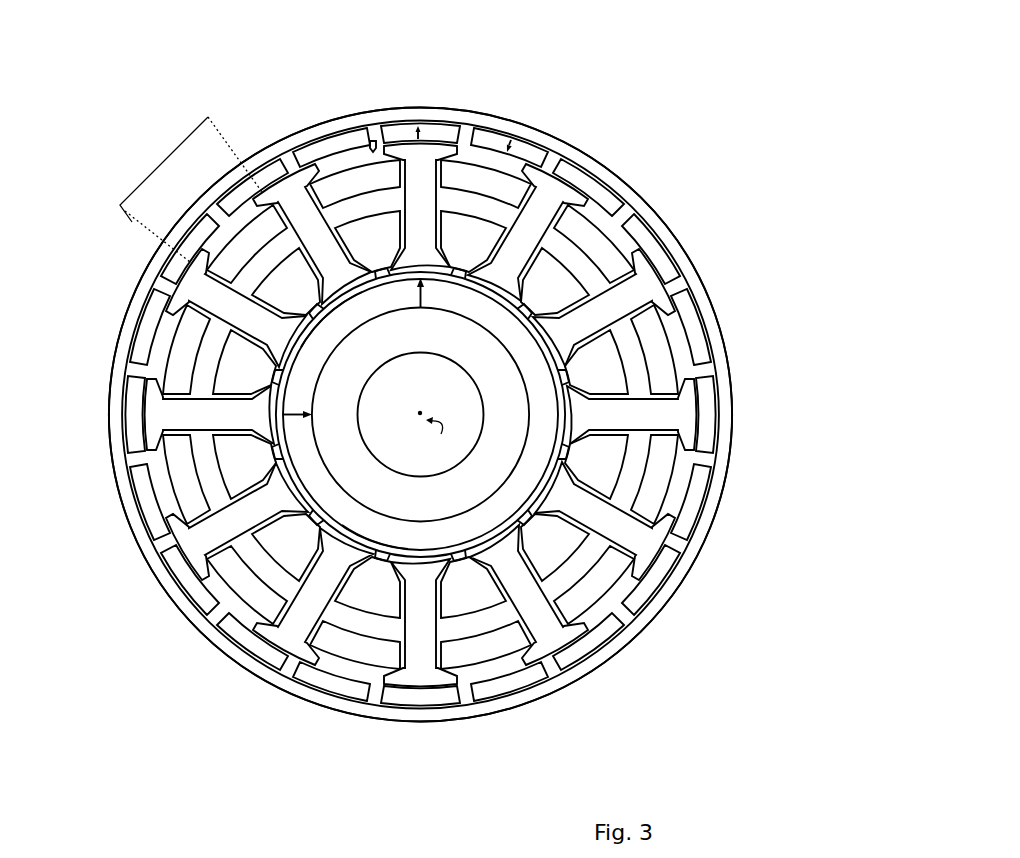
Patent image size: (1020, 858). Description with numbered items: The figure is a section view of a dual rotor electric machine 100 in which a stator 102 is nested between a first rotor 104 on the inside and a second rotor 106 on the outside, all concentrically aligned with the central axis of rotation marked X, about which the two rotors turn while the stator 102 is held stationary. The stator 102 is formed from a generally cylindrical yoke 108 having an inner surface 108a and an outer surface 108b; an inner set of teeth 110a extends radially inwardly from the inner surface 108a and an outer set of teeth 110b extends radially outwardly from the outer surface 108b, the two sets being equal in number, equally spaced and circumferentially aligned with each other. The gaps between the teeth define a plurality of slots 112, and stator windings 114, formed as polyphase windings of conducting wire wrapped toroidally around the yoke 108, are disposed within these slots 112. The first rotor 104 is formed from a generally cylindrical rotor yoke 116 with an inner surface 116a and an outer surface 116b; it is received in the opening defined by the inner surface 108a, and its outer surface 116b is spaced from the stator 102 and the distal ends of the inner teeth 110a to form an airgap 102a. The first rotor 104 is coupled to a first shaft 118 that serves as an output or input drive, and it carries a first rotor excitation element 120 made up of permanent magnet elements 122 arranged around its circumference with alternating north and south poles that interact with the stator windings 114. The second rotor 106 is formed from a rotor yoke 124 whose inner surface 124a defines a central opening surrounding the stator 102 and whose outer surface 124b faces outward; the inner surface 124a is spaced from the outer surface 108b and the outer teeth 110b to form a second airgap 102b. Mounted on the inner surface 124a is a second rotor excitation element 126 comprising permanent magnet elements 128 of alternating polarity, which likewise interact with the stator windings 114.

The dual rotor electric machine 100 is at (143, 58).
The stator 102 is at (467, 146).
The airgap 102a is at (285, 320).
The airgap 102b is at (165, 343).
The first rotor 104 is at (523, 512).
The second rotor 106 is at (545, 122).
The yoke 108 is at (607, 245).
The inner surface 108a is at (598, 372).
The outer surface 108b is at (580, 262).
The inner set of teeth 110a is at (600, 417).
The outer set of teeth 110b is at (666, 282).
The slots 112 is at (168, 161).
The stator windings 114 is at (657, 342).
The rotor yoke 116 is at (411, 350).
The inner surface 116a is at (430, 477).
The outer surface 116b is at (518, 516).
The first shaft 118 is at (432, 395).
The first rotor excitation element 120 is at (462, 561).
The permanent magnet elements 122 is at (337, 545).
The rotor yoke 124 is at (288, 150).
The inner surface 124a is at (371, 146).
The outer surface 124b is at (432, 105).
The second rotor excitation element 126 is at (180, 592).
The permanent magnet elements 128 is at (252, 645).